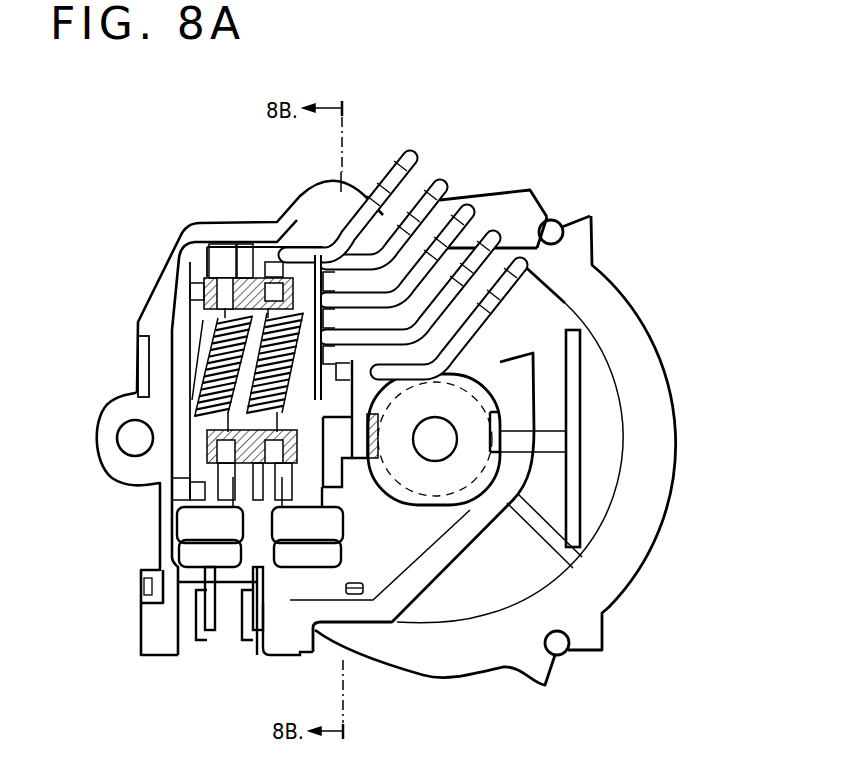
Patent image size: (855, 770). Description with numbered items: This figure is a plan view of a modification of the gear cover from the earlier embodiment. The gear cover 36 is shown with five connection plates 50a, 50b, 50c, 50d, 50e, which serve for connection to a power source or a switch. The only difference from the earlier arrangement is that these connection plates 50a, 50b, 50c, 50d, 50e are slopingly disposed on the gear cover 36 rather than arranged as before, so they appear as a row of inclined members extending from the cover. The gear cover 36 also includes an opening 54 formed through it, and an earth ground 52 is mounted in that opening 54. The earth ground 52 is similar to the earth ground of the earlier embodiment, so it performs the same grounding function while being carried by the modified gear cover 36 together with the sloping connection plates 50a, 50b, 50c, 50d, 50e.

The gear cover 36 is at (660, 442).
The connection plate 50a is at (413, 158).
The connection plate 50b is at (442, 190).
The connection plate 50c is at (470, 210).
The connection plate 50d is at (497, 237).
The connection plate 50e is at (525, 265).
The earth ground 52 is at (353, 455).
The opening 54 is at (383, 443).